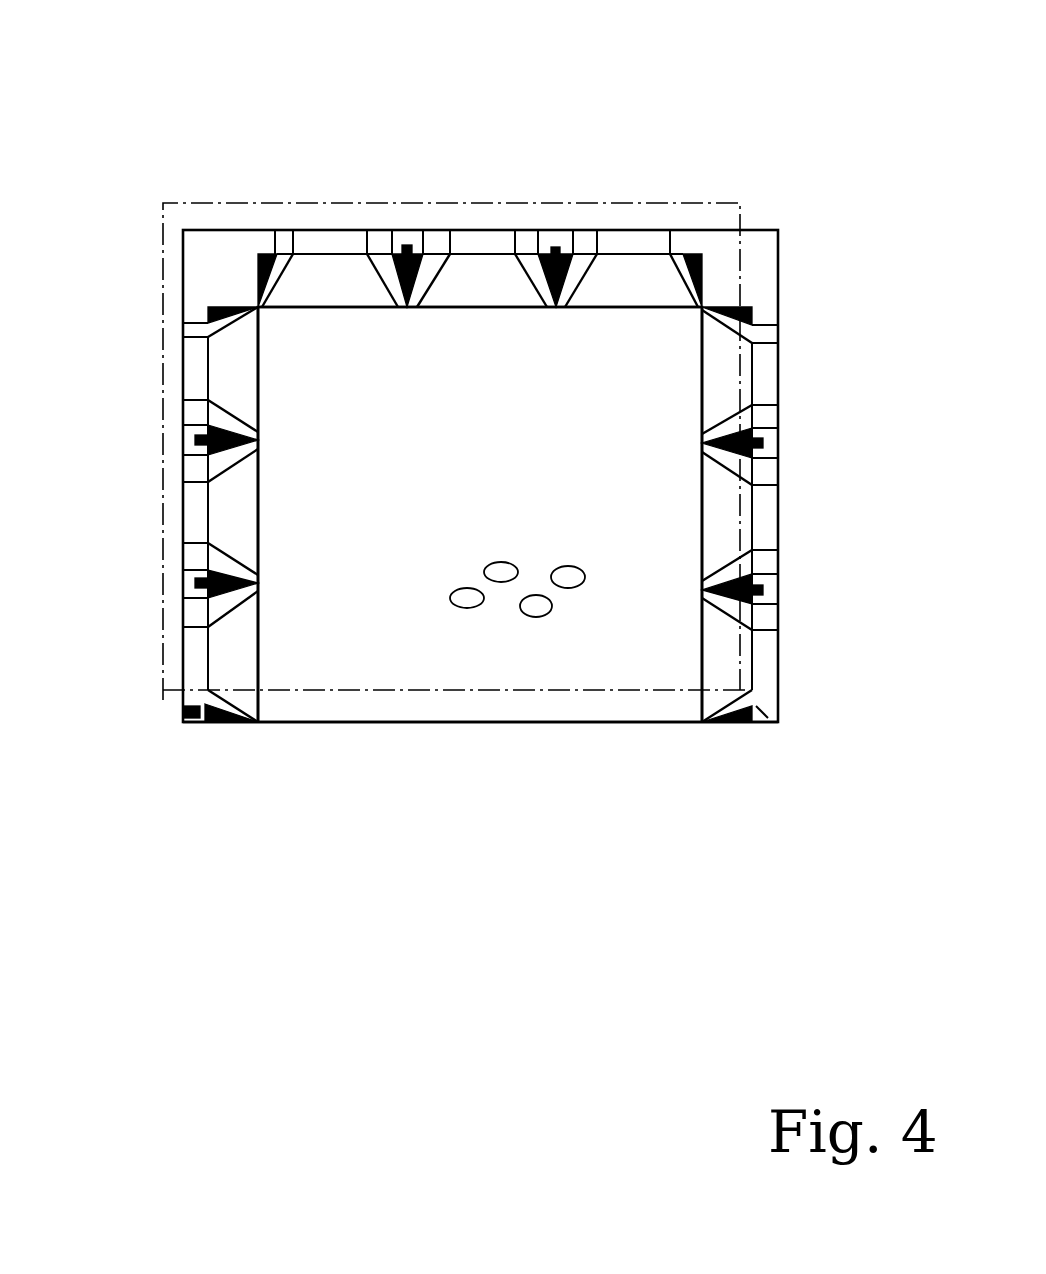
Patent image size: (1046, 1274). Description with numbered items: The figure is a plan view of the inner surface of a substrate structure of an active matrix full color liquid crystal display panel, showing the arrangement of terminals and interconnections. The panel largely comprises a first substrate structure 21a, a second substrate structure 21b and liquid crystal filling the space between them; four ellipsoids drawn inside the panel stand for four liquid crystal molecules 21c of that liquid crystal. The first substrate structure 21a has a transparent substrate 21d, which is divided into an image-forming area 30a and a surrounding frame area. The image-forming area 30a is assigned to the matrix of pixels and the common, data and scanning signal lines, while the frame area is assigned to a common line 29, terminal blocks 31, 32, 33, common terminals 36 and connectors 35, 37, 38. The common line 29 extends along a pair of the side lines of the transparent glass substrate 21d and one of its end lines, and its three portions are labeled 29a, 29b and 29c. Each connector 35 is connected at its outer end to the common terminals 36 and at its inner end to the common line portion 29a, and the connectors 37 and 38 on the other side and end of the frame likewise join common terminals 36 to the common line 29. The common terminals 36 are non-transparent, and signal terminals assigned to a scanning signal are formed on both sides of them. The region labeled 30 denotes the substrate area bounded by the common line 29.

The first substrate structure 21a is at (764, 226).
The second substrate structure 21b is at (692, 128).
The liquid crystal molecules 21c is at (498, 580).
The transparent substrate 21d is at (369, 723).
The common line 29 is at (480, 514).
The common line portion 29a is at (259, 397).
The common line portion 29b is at (701, 513).
The common line portion 29c is at (452, 309).
The substrate 30 is at (700, 664).
The image-forming area 30a is at (487, 657).
The terminal blocks 31 is at (332, 270).
The terminal blocks 32 is at (220, 661).
The terminal blocks 33 is at (800, 665).
The connectors 35 is at (220, 783).
The common terminals 36 is at (270, 256).
The connectors 37 is at (748, 318).
The connectors 38 is at (760, 153).